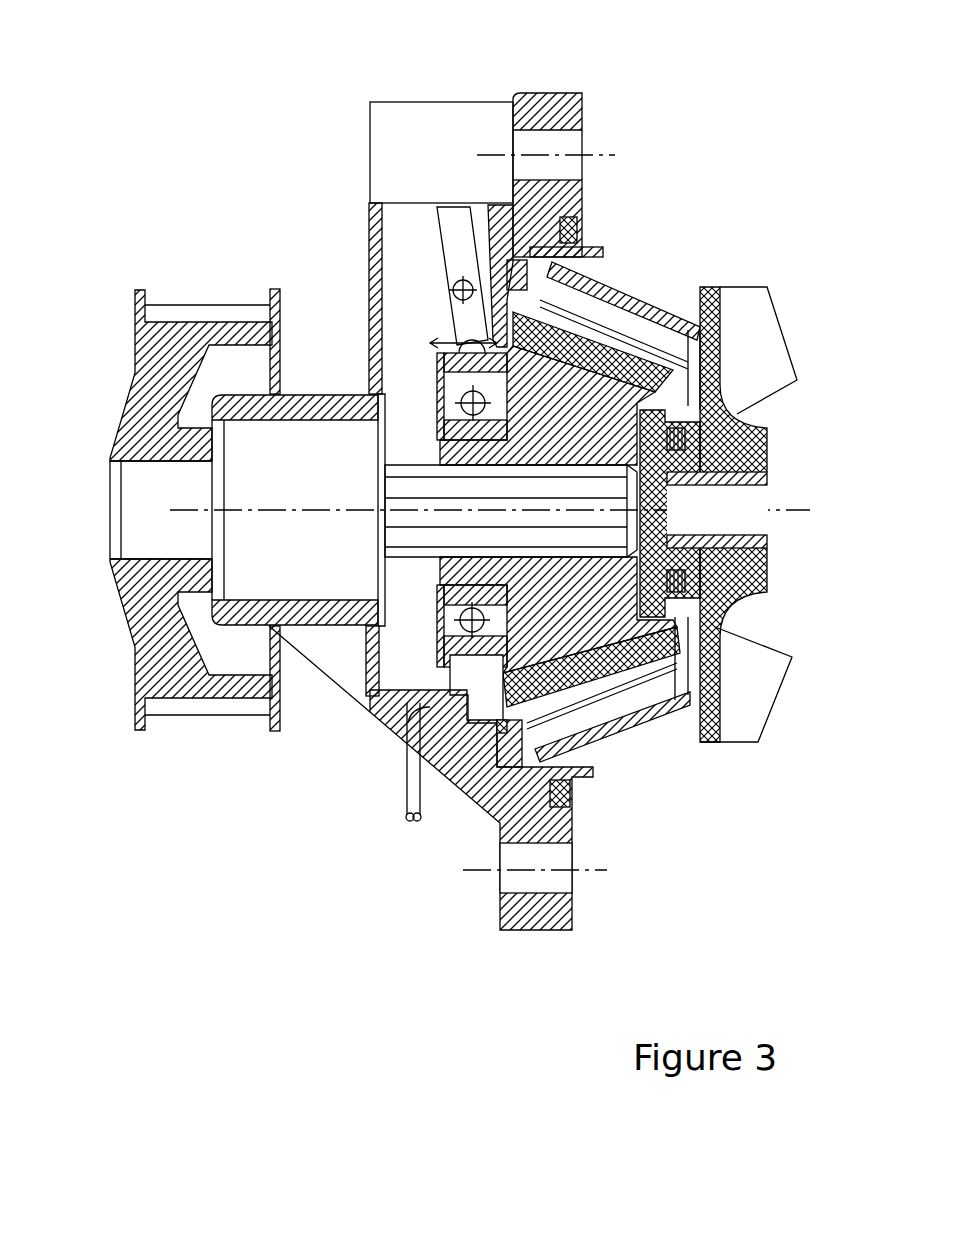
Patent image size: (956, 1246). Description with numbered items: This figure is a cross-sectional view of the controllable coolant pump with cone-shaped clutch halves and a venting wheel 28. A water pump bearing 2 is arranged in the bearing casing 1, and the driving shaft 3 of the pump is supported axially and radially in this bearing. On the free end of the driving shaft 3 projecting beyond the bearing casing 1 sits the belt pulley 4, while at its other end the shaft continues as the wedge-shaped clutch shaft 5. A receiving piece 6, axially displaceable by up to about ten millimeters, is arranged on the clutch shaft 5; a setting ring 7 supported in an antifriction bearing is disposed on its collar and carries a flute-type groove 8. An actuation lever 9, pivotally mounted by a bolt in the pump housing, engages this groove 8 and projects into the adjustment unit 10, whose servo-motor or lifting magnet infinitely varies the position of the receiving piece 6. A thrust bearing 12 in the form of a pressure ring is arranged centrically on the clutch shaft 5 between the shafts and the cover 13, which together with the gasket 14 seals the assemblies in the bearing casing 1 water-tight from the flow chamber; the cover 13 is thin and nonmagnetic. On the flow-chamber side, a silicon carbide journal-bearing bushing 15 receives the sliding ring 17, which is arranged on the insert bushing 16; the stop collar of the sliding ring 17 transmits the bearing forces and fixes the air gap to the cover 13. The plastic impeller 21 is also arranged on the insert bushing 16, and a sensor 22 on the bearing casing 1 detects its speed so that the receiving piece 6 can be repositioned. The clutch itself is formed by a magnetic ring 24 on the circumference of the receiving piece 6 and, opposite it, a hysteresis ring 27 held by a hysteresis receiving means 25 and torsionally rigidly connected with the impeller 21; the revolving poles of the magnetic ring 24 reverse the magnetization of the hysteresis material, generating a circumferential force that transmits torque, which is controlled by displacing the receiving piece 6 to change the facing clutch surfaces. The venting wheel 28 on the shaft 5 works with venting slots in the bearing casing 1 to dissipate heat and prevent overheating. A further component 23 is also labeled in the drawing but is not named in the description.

The bearing casing 1 is at (342, 393).
The water pump bearing 2 is at (276, 495).
The driving shaft 3 is at (108, 457).
The belt pulley 4 is at (171, 371).
The clutch shaft 5 is at (430, 560).
The receiving piece 6 is at (523, 657).
The setting ring 7 is at (422, 342).
The flute-type groove 8 is at (455, 653).
The actuation lever 9 is at (453, 233).
The adjustment unit 10 is at (455, 120).
The thrust bearing 12 is at (637, 337).
The cover 13 is at (717, 360).
The gasket 14 is at (575, 795).
The journal-bearing bushing 15 is at (752, 638).
The insert bushing 16 is at (767, 541).
The sliding ring 17 is at (740, 597).
The impeller 21 is at (700, 378).
The sensor 22 is at (460, 713).
The mounting flange 23 is at (533, 355).
The magnetic ring 24 is at (678, 323).
The hysteresis receiving means 25 is at (717, 287).
The hysteresis ring 27 is at (652, 307).
The venting wheel 28 is at (437, 537).